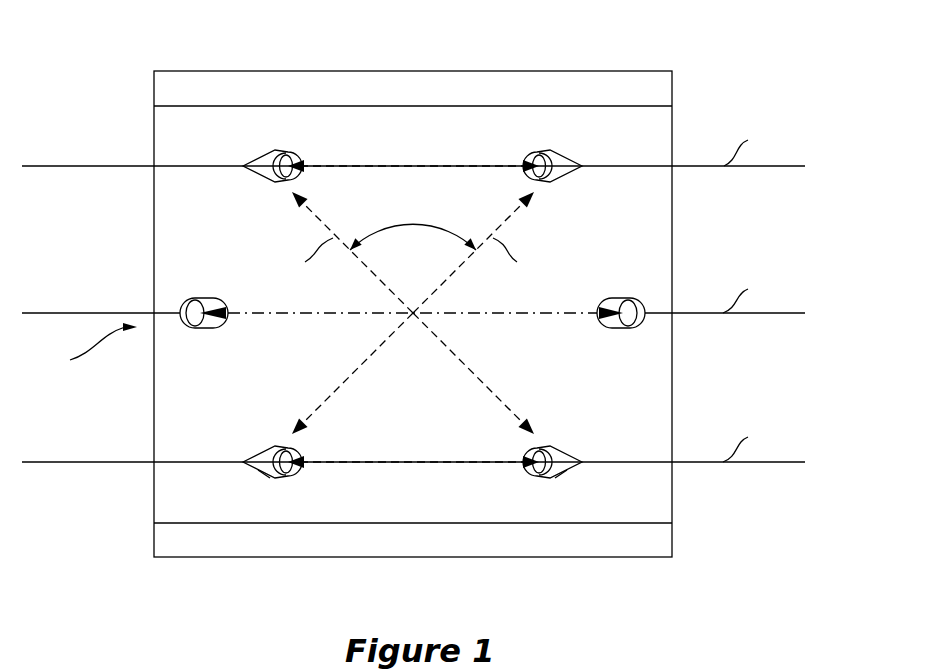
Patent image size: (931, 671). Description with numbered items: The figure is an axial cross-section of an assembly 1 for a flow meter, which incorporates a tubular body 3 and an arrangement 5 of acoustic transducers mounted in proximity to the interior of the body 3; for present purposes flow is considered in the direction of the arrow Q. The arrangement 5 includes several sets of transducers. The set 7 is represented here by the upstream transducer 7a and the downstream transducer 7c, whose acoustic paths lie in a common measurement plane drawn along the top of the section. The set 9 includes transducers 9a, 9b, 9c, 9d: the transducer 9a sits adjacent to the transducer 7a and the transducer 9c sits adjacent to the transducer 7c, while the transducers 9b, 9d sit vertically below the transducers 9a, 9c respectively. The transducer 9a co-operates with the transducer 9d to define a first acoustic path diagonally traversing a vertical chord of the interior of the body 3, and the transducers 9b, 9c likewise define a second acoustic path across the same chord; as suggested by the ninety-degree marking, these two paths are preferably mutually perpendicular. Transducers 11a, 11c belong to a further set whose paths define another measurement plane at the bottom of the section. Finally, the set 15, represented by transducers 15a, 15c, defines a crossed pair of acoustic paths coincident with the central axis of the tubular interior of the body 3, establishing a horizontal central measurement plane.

The assembly 1 is at (135, 50).
The tubular body 3 is at (622, 71).
The arrangement of acoustic transducers 5 is at (648, 204).
The set of acoustic transducers 7 is at (235, 150).
The upstream transducer 7a is at (262, 150).
The downstream transducer 7c is at (562, 150).
The set of acoustic transducers 9 is at (235, 440).
The acoustic transducer 9a is at (273, 187).
The acoustic transducer 9b is at (270, 442).
The acoustic transducer 9c is at (555, 187).
The acoustic transducer 9d is at (558, 442).
The acoustic transducer 11a is at (262, 473).
The acoustic transducer 11c is at (570, 473).
The set of acoustic transducers 15 is at (125, 300).
The acoustic transducer 15a is at (200, 297).
The acoustic transducer 15c is at (628, 297).